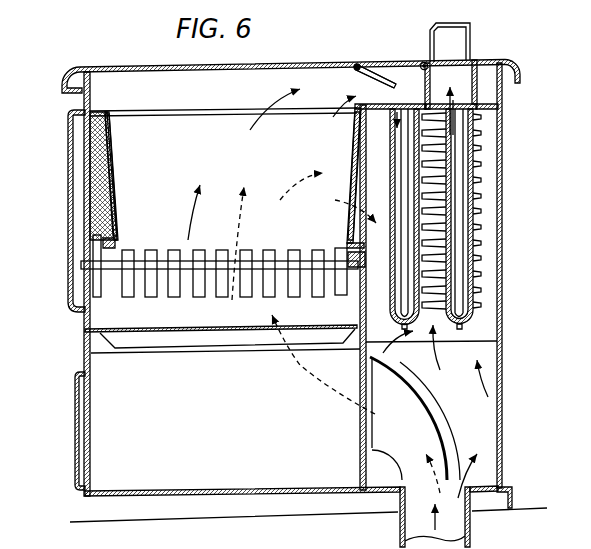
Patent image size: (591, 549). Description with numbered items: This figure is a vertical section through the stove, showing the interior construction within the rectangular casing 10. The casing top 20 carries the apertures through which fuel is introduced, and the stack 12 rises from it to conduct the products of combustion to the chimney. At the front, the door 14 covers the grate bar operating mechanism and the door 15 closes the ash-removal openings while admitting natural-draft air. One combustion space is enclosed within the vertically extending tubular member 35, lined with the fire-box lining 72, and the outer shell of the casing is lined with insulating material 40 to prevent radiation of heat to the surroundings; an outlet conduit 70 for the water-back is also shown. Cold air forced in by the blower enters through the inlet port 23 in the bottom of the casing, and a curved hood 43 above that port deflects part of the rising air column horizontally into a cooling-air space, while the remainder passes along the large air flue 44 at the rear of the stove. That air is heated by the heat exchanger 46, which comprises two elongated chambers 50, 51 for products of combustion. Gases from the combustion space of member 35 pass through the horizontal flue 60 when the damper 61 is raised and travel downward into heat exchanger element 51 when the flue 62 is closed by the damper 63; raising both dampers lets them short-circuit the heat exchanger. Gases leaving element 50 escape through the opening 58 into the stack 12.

The casing 10 is at (503, 177).
The stack 12 is at (467, 25).
The door 14 is at (72, 207).
The door 15 is at (76, 395).
The stove casing top 20 is at (299, 65).
The inlet port 23 is at (458, 522).
The tubular member 35 is at (353, 138).
The insulating material 40 is at (93, 147).
The hood 43 is at (418, 408).
The air flue 44 is at (483, 232).
The heat exchanger 46 is at (470, 138).
The heat exchanger element 50 is at (462, 262).
The heat exchanger element 51 is at (407, 198).
The opening 58 is at (410, 108).
The horizontal flue 60 is at (384, 62).
The damper 61 is at (362, 74).
The flue 62 is at (432, 82).
The damper 63 is at (423, 66).
The outlet conduit 70 is at (203, 285).
The fire-box lining 72 is at (113, 212).